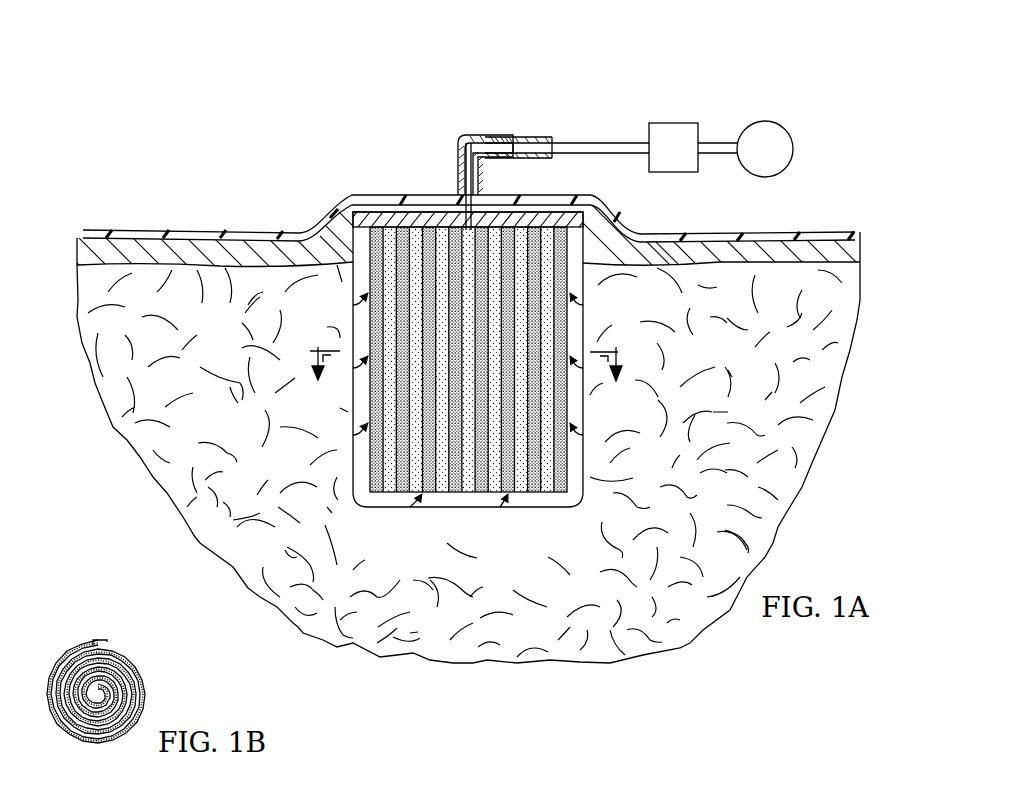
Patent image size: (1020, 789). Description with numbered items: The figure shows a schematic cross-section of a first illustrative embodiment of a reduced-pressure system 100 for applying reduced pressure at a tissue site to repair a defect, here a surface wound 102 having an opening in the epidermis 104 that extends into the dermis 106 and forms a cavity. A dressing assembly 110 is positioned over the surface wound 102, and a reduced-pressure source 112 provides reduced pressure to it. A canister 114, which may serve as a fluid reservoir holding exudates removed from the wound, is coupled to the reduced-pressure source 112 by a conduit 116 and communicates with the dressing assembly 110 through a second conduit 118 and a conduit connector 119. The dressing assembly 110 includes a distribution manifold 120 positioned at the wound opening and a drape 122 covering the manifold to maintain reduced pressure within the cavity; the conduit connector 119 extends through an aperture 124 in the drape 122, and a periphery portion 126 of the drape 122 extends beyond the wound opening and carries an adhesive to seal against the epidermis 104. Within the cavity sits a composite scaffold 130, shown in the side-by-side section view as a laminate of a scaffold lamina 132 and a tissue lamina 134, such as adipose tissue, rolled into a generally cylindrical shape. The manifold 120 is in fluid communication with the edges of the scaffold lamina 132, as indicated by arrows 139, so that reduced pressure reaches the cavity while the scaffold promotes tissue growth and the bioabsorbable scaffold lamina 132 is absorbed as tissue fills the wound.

In FIG. 1A, the reduced-pressure system 100 is at (242, 122).
In FIG. 1A, the surface wound 102 is at (474, 503).
In FIG. 1A, the epidermis 104 is at (860, 250).
In FIG. 1A, the dermis 106 is at (787, 485).
In FIG. 1A, the dressing assembly 110 is at (317, 163).
In FIG. 1A, the reduced-pressure source 112 is at (762, 121).
In FIG. 1A, the canister 114 is at (672, 123).
In FIG. 1A, the conduit 116 is at (717, 143).
In FIG. 1A, the second conduit 118 is at (586, 143).
In FIG. 1A, the conduit connector 119 is at (466, 136).
In FIG. 1A, the distribution manifold 120 is at (560, 211).
In FIG. 1A, the drape 122 is at (322, 224).
In FIG. 1A, the aperture 124 is at (466, 186).
In FIG. 1A, the periphery portion 126 is at (120, 230).
In FIG. 1A, the composite scaffold 130 is at (471, 386).
In FIG. 1B, the composite scaffold 130 is at (106, 683).
In FIG. 1A, the scaffold lamina 132 is at (450, 488).
In FIG. 1B, the scaffold lamina 132 is at (76, 660).
In FIG. 1A, the tissue lamina 134 is at (543, 489).
In FIG. 1B, the tissue lamina 134 is at (78, 725).
In FIG. 1A, the arrows 139 is at (353, 305).